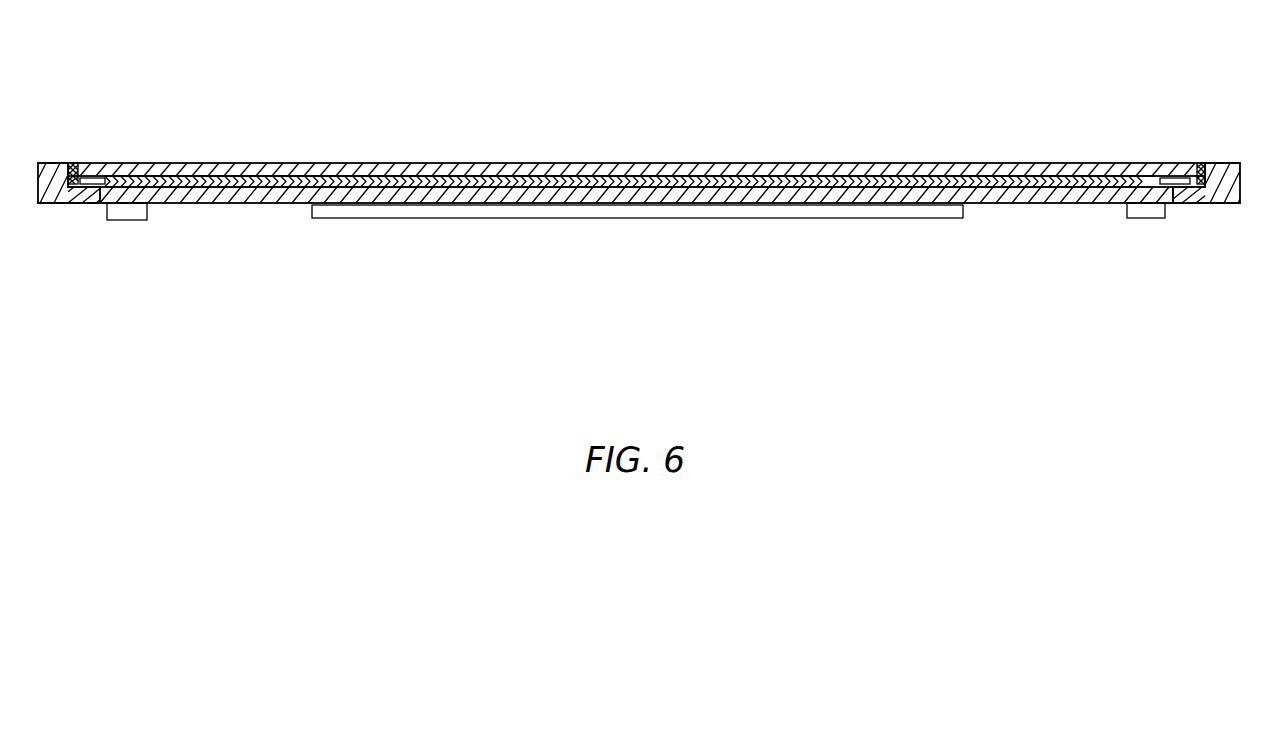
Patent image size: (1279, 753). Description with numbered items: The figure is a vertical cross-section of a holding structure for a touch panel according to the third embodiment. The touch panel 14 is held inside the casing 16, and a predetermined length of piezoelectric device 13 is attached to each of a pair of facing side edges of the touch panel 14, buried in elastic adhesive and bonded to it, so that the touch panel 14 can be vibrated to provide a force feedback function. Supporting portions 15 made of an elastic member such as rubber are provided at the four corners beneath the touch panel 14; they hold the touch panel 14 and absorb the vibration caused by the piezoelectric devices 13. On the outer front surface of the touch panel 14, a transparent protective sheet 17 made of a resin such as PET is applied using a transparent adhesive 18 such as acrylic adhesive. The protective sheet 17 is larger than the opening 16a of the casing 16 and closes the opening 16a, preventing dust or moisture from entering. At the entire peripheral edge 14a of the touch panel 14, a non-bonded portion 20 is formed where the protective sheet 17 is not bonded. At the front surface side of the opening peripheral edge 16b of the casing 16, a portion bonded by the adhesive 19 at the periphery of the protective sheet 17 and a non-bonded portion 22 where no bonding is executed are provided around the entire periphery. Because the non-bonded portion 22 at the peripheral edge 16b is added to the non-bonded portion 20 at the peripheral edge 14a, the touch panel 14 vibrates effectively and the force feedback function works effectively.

The piezoelectric device 13 is at (795, 207).
The touch panel 14 is at (238, 202).
The peripheral edge of the touch panel 14a is at (115, 202).
The supporting portion 15 is at (130, 213).
The casing 16 is at (1235, 162).
The opening of the casing 16a is at (100, 200).
The opening peripheral edge of the casing 16b is at (78, 200).
The protective sheet 17 is at (617, 169).
The transparent adhesive 18 is at (723, 183).
The adhesive 19 is at (62, 162).
The non-bonded portion 20 is at (113, 162).
The non-bonded portion 22 is at (92, 162).